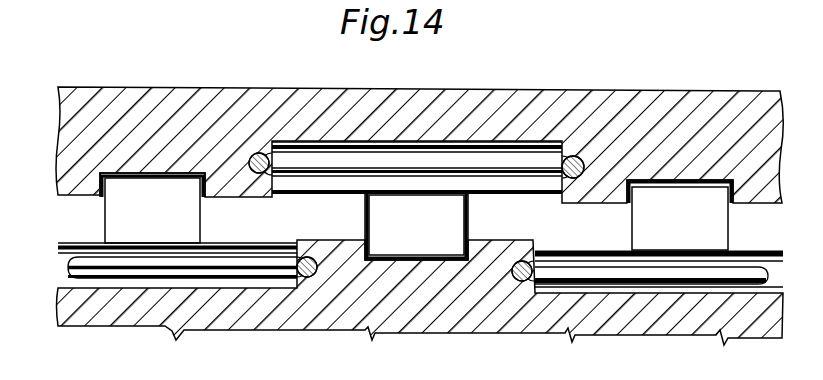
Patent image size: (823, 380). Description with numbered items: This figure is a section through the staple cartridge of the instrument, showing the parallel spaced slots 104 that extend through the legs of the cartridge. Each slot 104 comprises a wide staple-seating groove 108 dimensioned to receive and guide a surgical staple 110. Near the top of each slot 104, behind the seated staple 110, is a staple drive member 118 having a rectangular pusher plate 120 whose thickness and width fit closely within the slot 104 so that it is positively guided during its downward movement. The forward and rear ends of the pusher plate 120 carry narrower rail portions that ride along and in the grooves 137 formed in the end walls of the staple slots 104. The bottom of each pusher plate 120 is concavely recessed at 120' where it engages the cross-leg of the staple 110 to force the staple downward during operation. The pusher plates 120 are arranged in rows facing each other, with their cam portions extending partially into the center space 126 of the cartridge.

The slot 104 is at (520, 138).
The staple-seating groove 108 is at (582, 180).
The surgical staple 110 is at (306, 158).
The staple drive member 118 is at (75, 243).
The pusher plate 120 is at (438, 216).
The concavely recessed bottom of pusher plate 120' is at (416, 216).
The center space 126 is at (155, 173).
The groove 137 is at (320, 277).